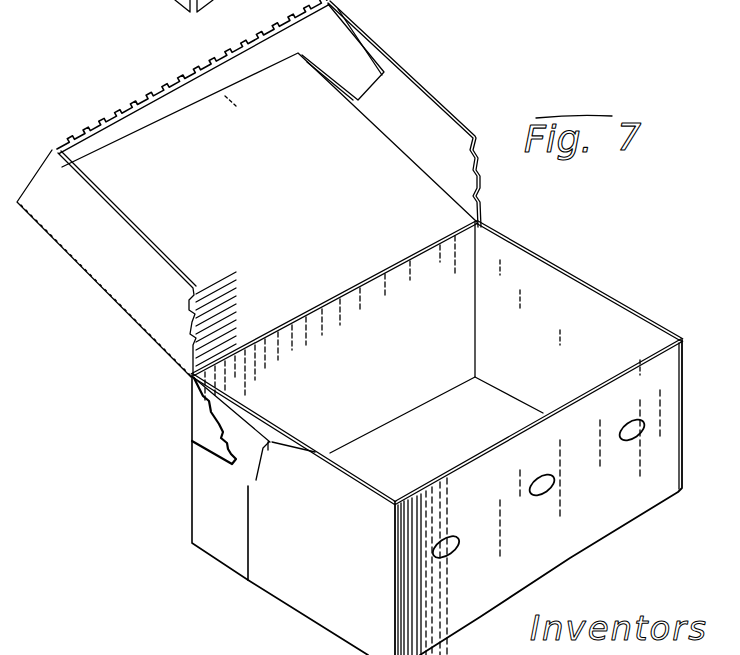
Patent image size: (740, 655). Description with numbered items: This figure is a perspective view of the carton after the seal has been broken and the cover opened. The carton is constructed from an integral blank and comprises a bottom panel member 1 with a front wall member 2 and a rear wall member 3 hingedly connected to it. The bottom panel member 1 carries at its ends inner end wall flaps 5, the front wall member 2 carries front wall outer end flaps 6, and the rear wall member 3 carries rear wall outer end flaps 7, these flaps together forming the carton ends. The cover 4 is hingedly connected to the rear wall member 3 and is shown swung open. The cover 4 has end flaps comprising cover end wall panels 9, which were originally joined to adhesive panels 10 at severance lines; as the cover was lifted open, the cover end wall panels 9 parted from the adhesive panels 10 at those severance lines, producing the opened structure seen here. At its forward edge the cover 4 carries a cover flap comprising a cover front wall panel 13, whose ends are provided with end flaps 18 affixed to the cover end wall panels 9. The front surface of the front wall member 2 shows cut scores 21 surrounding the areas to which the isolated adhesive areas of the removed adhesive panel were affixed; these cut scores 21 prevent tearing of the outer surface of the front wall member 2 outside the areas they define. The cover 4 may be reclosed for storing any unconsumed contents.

The bottom panel member 1 is at (452, 437).
The front wall member 2 is at (531, 556).
The rear wall member 3 is at (387, 346).
The cover 4 is at (259, 181).
The inner end wall flaps 5 is at (556, 334).
The front wall outer end flaps 6 is at (322, 555).
The rear wall outer end flaps 7 is at (223, 510).
The cover end wall panels 9 is at (120, 265).
The adhesive panels 10 is at (198, 423).
The cover front wall panel 13 is at (154, 98).
The end flaps 18 is at (350, 53).
The cut scores 21 is at (453, 537).